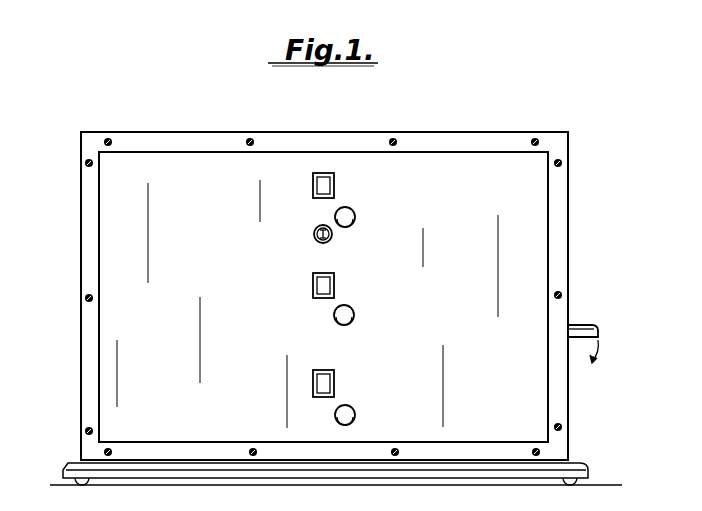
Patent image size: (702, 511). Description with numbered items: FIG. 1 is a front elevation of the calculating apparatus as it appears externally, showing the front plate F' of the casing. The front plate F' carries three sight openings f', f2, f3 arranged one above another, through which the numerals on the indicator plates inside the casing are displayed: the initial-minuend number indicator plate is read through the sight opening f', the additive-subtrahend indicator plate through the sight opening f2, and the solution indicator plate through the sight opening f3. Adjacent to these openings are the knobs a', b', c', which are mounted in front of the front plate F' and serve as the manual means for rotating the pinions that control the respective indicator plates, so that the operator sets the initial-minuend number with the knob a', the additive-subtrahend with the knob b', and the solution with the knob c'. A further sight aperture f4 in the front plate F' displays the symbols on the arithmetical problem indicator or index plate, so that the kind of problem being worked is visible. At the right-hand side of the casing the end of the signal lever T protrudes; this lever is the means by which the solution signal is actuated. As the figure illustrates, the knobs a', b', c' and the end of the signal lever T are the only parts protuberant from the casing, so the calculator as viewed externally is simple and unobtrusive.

The front plate F' is at (336, 308).
The sight opening f' is at (298, 183).
The sight opening f2 is at (312, 285).
The sight opening f3 is at (312, 378).
The sight aperture f4 is at (312, 234).
The knob a' is at (375, 216).
The knob b' is at (368, 315).
The knob c' is at (362, 413).
The signal lever T is at (596, 323).